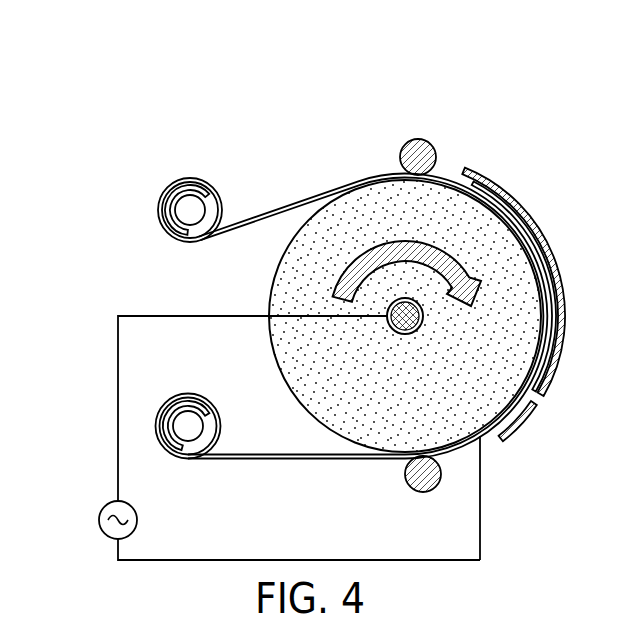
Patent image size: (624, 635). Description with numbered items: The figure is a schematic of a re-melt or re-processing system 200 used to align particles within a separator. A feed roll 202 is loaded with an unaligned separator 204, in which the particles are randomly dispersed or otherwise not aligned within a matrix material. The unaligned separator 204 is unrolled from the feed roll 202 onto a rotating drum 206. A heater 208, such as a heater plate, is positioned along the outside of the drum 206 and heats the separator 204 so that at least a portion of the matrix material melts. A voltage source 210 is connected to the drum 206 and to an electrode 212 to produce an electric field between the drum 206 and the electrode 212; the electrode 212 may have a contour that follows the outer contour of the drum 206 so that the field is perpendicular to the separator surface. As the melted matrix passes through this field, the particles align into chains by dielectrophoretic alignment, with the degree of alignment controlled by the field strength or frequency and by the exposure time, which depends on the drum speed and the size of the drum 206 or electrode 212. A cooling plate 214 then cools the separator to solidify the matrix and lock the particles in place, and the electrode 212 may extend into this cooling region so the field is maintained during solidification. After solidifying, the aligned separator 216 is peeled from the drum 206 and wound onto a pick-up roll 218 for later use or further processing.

The re-melt or re-processing system 200 is at (424, 91).
The feed roll 202 is at (178, 208).
The unaligned separator 204 is at (297, 200).
The rotating drum 206 is at (271, 282).
The heater 208 is at (497, 186).
The voltage source 210 is at (100, 520).
The electrode 212 is at (483, 447).
The cooling plate 214 is at (538, 422).
The aligned separator 216 is at (322, 460).
The pick-up roll 218 is at (208, 420).